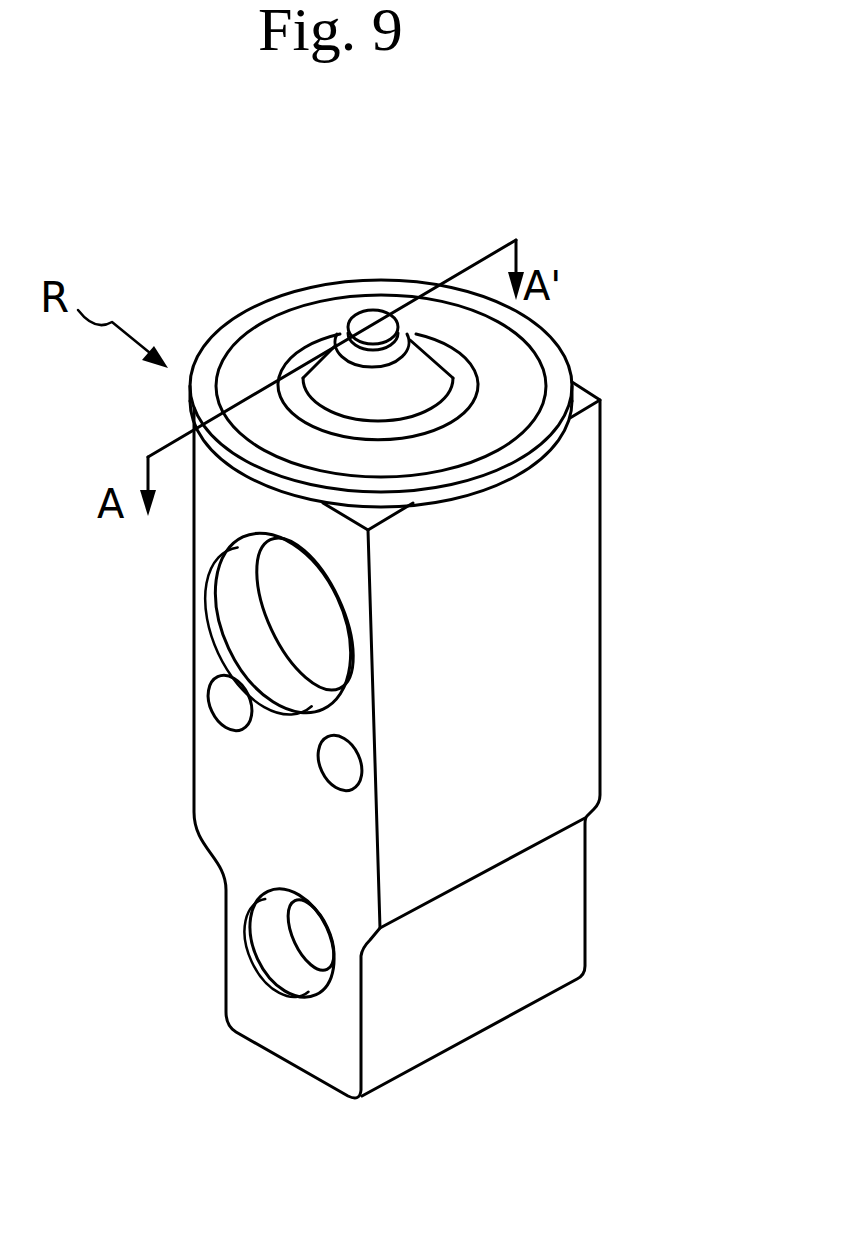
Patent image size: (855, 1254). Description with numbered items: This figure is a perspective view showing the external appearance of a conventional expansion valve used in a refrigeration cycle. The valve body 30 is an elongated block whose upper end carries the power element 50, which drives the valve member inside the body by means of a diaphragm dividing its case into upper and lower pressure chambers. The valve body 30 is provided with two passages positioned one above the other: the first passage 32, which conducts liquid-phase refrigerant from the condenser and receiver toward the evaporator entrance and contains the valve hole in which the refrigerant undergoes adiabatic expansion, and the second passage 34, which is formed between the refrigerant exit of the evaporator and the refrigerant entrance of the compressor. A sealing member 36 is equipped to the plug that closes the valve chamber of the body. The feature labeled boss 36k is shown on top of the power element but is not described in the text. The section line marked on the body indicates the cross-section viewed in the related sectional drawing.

The valve body 30 is at (565, 506).
The refrigerant inlet port 32 is at (273, 937).
The refrigerant outlet port 34 is at (247, 610).
The cap / power element 36 is at (590, 280).
The boss of cap 36k is at (375, 322).
The mounting holes 50 is at (222, 702).